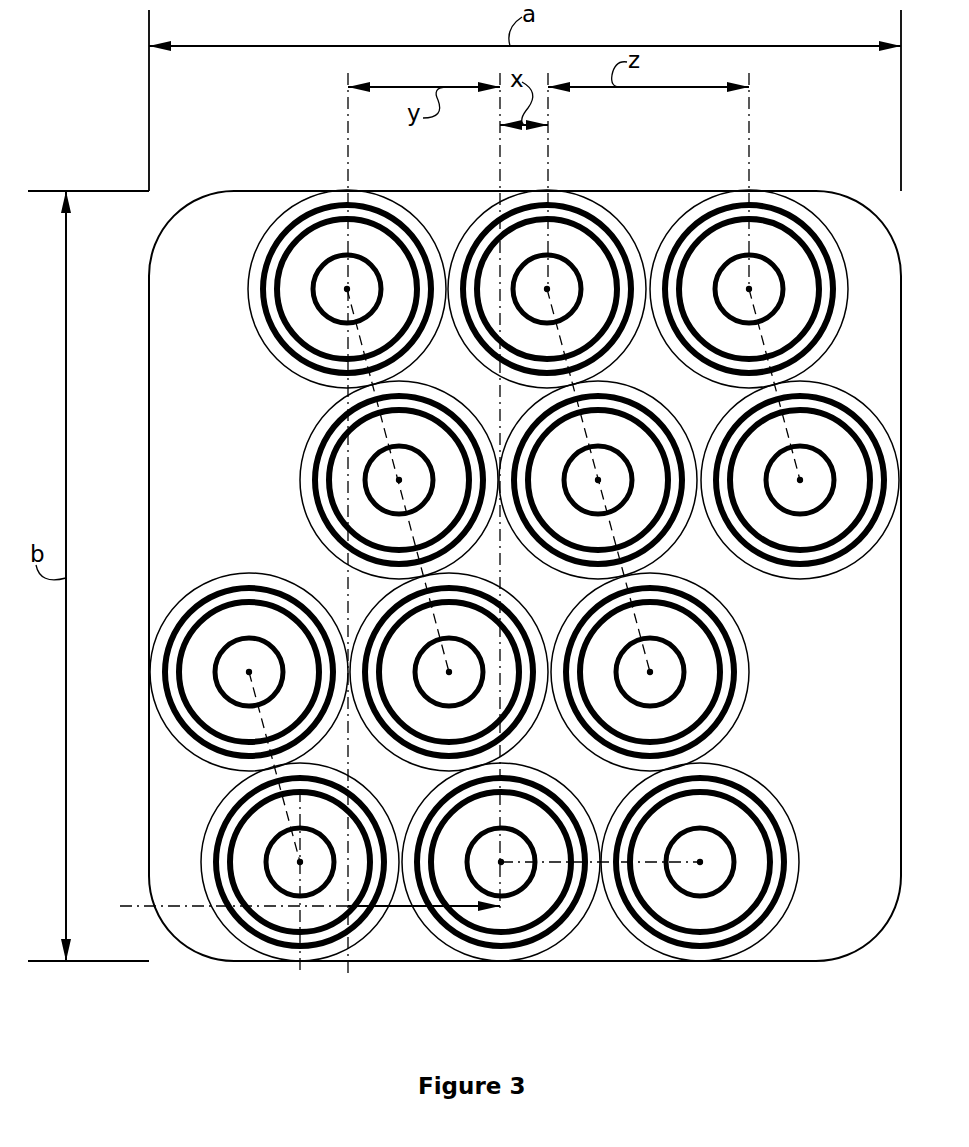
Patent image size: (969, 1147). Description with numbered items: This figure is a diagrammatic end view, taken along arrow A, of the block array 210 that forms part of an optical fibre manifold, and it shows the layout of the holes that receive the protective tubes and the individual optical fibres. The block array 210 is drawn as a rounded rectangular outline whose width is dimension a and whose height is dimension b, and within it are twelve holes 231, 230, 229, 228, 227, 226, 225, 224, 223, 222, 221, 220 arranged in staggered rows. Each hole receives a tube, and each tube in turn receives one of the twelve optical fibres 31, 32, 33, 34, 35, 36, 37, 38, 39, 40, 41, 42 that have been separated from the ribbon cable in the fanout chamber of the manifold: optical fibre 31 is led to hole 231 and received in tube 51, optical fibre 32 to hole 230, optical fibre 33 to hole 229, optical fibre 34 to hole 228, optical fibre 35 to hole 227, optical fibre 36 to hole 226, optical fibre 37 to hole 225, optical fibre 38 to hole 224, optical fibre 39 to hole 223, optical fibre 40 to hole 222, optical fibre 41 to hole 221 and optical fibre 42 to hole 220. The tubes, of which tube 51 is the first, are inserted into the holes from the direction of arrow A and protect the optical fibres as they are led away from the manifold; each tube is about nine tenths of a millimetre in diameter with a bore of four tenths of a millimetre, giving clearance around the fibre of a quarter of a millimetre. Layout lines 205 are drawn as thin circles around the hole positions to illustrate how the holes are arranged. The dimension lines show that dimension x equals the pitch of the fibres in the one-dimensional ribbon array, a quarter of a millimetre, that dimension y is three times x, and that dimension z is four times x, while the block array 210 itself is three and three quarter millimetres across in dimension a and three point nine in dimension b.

The optical fibre 31 is at (228, 643).
The optical fibre 32 is at (267, 877).
The optical fibre 33 is at (347, 257).
The optical fibre 34 is at (367, 459).
The optical fibre 35 is at (422, 650).
The optical fibre 36 is at (513, 895).
The optical fibre 37 is at (565, 260).
The optical fibre 38 is at (623, 453).
The optical fibre 39 is at (687, 660).
The optical fibre 40 is at (731, 840).
The optical fibre 41 is at (765, 255).
The optical fibre 42 is at (818, 508).
The tube 51 is at (190, 648).
The layout lines 205 is at (133, 782).
The block array 210 is at (612, 962).
The hole 220 is at (843, 401).
The hole 221 is at (712, 217).
The hole 222 is at (783, 870).
The hole 223 is at (722, 720).
The hole 224 is at (572, 560).
The hole 225 is at (518, 212).
The hole 226 is at (445, 928).
The hole 227 is at (388, 735).
The hole 228 is at (340, 423).
The hole 229 is at (283, 223).
The hole 230 is at (268, 943).
The hole 231 is at (167, 703).